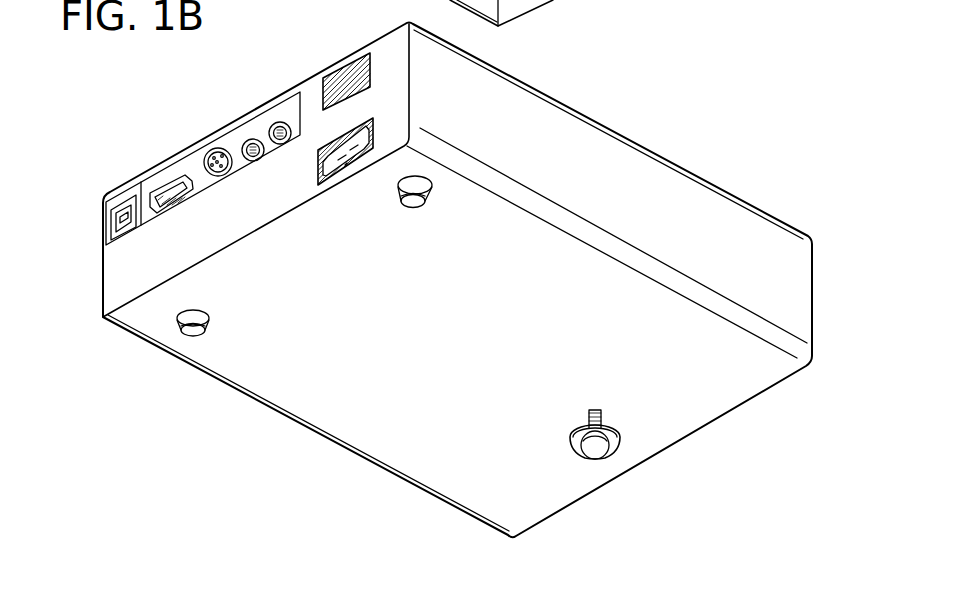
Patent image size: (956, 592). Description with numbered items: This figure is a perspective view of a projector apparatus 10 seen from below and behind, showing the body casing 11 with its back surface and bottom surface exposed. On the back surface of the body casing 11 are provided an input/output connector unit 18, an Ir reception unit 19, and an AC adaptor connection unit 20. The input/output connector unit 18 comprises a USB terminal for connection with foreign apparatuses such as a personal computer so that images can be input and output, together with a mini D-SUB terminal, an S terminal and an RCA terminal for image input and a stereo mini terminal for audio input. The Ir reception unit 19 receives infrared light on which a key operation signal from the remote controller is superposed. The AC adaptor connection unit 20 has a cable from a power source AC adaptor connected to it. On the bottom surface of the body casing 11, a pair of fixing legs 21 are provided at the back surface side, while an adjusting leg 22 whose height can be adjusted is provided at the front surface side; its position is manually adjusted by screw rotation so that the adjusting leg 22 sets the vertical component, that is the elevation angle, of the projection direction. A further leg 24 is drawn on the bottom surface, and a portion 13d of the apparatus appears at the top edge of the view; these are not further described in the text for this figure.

The projector 10 is at (682, 100).
The body casing 11 is at (673, 163).
The lens unit 13d is at (563, 0).
The input/output connector unit 18 is at (203, 183).
The Ir reception unit 19 is at (338, 68).
The AC adaptor connection unit 20 is at (375, 132).
The fixing leg 21 is at (432, 192).
The adjusting leg 22 is at (603, 458).
The foot 24 is at (210, 332).